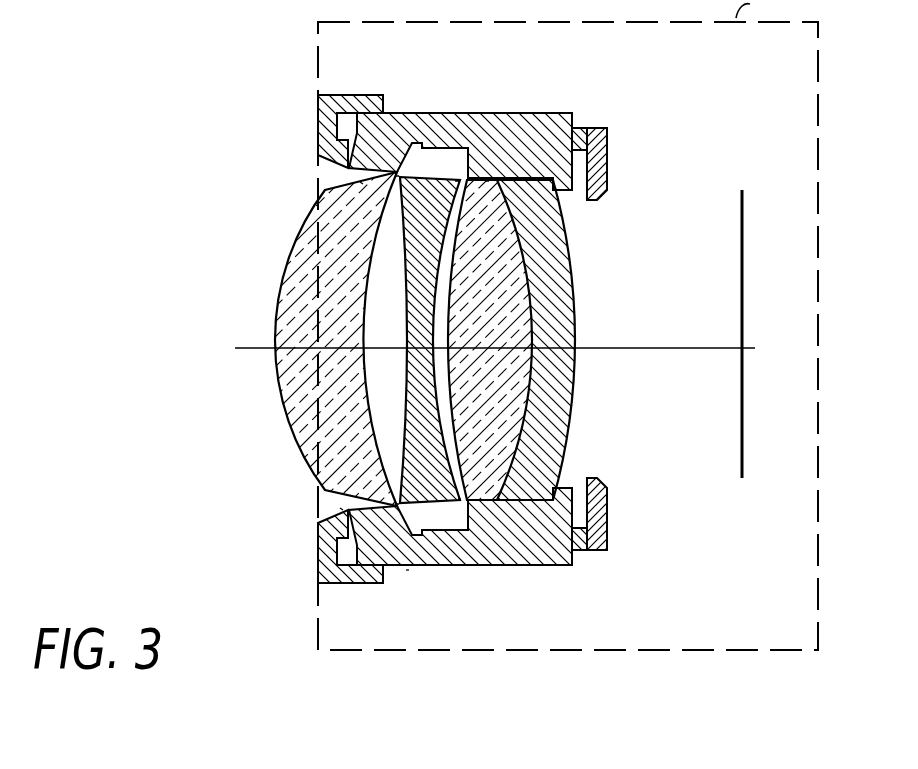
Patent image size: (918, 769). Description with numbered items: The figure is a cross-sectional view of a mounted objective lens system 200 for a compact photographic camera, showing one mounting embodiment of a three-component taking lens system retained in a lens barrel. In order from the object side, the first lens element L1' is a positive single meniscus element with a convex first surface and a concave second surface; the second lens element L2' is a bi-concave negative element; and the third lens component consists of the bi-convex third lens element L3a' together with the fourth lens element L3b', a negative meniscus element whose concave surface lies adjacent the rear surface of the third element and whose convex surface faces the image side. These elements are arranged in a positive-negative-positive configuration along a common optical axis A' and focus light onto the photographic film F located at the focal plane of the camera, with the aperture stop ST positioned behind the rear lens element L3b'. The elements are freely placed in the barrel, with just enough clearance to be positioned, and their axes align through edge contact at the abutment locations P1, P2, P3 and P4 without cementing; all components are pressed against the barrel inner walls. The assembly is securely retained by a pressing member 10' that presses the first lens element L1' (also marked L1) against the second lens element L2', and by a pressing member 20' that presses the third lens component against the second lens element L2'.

The lens unit / imaging optical system 200 is at (190, 270).
The pressing member 10' is at (303, 339).
The pressing member 20' is at (624, 325).
The aperture stop ST is at (608, 184).
The first lens element L1' is at (305, 339).
The second lens element L2' is at (338, 340).
The third lens element L3a' is at (552, 340).
The fourth lens element L3b' is at (582, 340).
The first lens L1 is at (382, 598).
The first abutment point P1 is at (360, 185).
The second abutment point P2 is at (406, 172).
The third abutment point P3 is at (456, 184).
The fourth abutment point P4 is at (486, 182).
The optical axis A' is at (495, 324).
The photographic film F is at (745, 196).